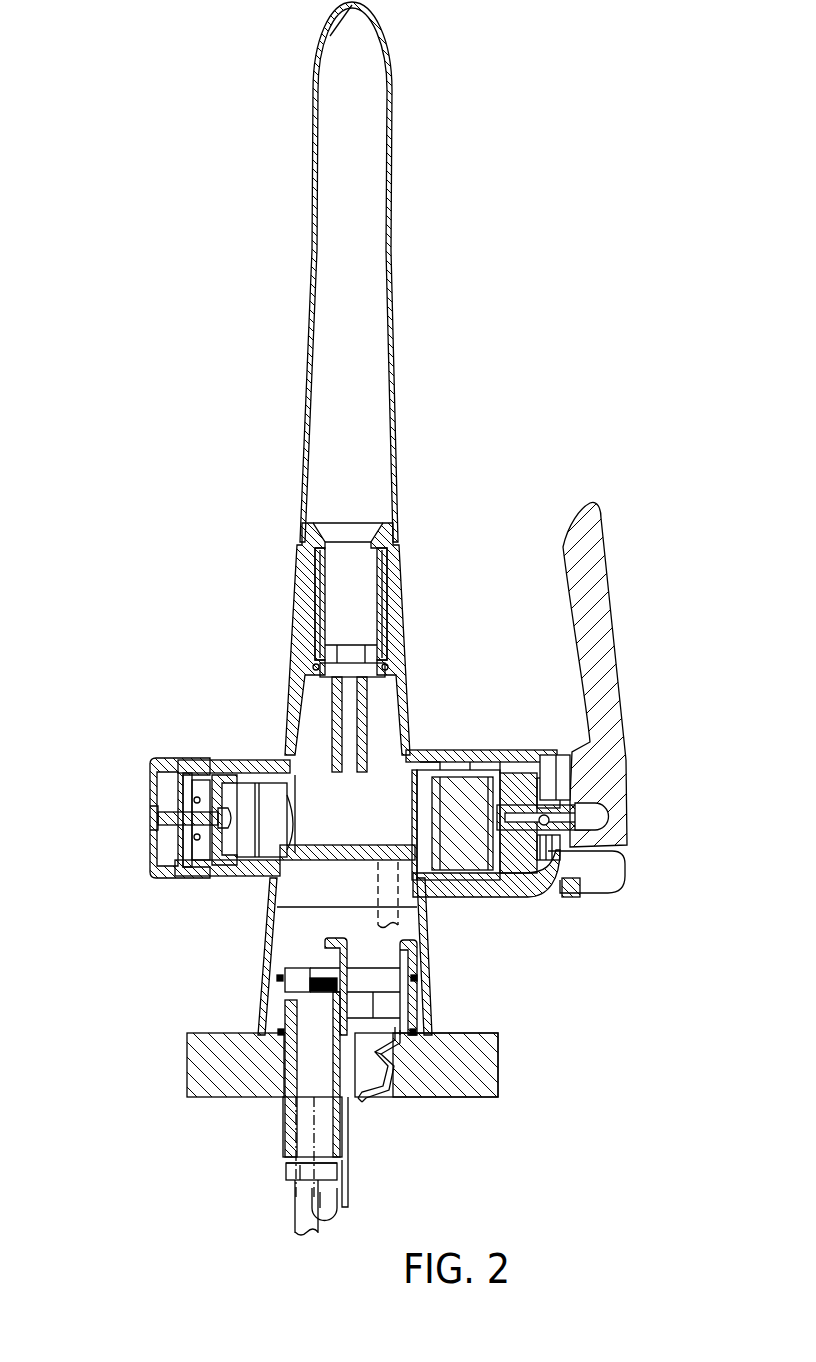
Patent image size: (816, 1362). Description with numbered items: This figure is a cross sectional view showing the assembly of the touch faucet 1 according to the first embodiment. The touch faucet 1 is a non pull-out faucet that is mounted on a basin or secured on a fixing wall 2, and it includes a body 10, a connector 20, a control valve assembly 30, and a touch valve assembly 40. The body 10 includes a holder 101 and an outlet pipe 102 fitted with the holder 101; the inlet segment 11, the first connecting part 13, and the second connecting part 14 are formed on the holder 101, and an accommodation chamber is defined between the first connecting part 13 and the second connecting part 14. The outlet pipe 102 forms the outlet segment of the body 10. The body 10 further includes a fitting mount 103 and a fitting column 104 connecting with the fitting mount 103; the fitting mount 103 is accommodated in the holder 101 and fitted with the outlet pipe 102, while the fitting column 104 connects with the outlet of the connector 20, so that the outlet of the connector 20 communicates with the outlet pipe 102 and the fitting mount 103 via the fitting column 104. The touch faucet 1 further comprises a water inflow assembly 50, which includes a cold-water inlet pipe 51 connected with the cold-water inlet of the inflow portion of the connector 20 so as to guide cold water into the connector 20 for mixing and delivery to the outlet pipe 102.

The touch faucet 1 is at (386, 618).
The body 10 is at (367, 387).
The holder 101 is at (405, 575).
The outlet pipe 102 is at (391, 293).
The fitting mount 103 is at (318, 600).
The fitting column 104 is at (366, 712).
The inlet segment 11 is at (432, 1027).
The first connecting part 13 is at (473, 740).
The second connecting part 14 is at (242, 742).
The fixing wall 2 is at (480, 1060).
The connector 20 is at (327, 850).
The control valve assembly 30 is at (624, 640).
The touch valve assembly 40 is at (144, 815).
The water inflow assembly 50 is at (418, 897).
The cold-water inlet pipe 51 is at (295, 1210).